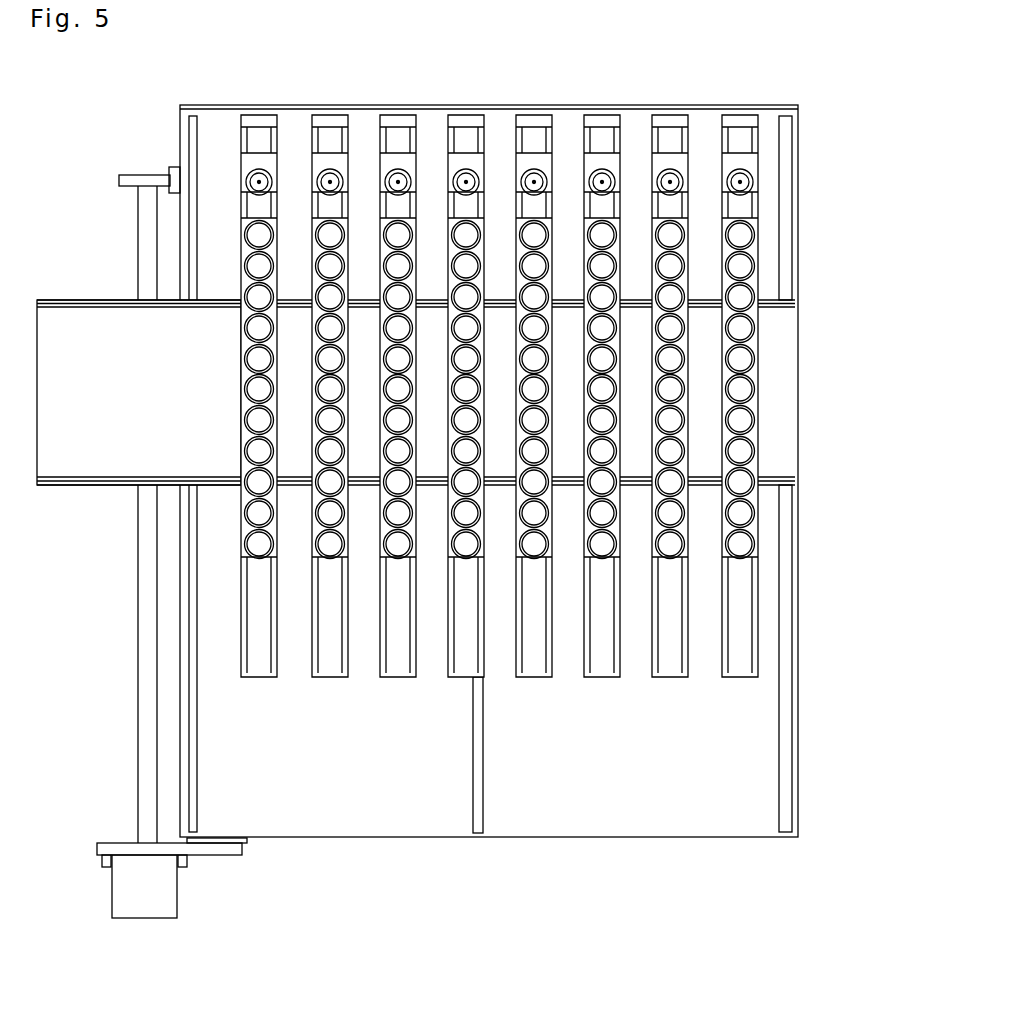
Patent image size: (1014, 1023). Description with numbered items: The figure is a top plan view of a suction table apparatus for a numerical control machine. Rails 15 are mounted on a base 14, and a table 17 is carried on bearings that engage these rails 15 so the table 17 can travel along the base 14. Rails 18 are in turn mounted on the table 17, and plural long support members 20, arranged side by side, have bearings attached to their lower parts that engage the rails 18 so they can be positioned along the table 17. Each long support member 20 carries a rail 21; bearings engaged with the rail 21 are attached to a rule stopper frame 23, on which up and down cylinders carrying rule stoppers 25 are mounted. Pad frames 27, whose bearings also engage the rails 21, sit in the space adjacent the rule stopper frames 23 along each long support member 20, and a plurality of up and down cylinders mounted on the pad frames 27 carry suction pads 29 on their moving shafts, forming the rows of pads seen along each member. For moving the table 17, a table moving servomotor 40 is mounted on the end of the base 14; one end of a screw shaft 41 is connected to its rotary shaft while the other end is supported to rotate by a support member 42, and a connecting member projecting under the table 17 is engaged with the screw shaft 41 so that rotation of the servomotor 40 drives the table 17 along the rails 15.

The base 14 is at (392, 812).
The rails 15 is at (192, 789).
The table 17 is at (90, 318).
The rails 18 is at (118, 308).
The long support members 20 is at (598, 663).
The rails 21 is at (318, 667).
The rule stopper frames 23 is at (753, 162).
The rule stoppers 25 is at (753, 182).
The pad frames 27 is at (247, 439).
The suction pads 29 is at (247, 335).
The table moving servomotor 40 is at (143, 905).
The screw shaft 41 is at (143, 613).
The support member 42 is at (128, 178).